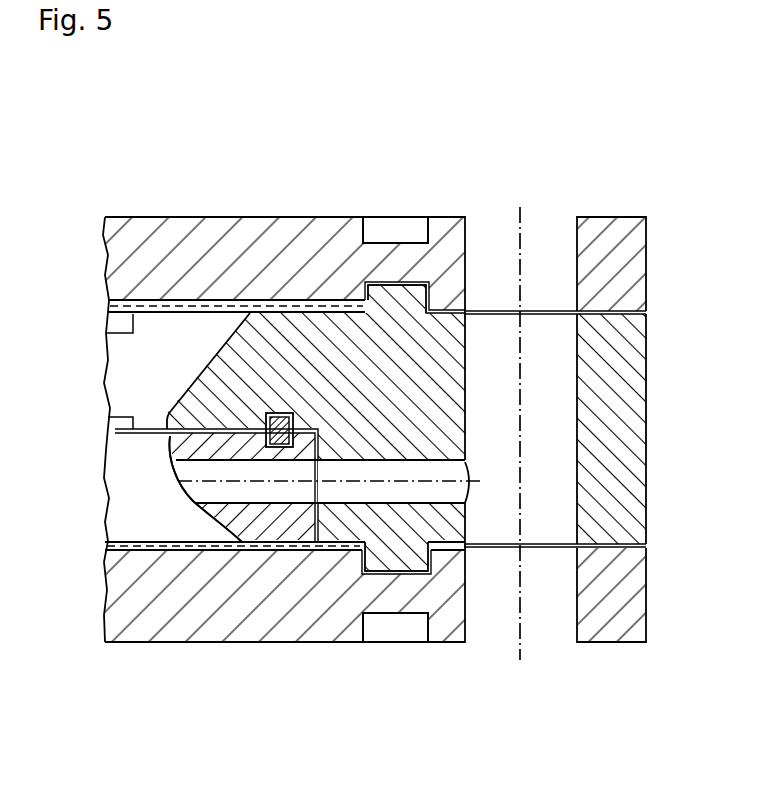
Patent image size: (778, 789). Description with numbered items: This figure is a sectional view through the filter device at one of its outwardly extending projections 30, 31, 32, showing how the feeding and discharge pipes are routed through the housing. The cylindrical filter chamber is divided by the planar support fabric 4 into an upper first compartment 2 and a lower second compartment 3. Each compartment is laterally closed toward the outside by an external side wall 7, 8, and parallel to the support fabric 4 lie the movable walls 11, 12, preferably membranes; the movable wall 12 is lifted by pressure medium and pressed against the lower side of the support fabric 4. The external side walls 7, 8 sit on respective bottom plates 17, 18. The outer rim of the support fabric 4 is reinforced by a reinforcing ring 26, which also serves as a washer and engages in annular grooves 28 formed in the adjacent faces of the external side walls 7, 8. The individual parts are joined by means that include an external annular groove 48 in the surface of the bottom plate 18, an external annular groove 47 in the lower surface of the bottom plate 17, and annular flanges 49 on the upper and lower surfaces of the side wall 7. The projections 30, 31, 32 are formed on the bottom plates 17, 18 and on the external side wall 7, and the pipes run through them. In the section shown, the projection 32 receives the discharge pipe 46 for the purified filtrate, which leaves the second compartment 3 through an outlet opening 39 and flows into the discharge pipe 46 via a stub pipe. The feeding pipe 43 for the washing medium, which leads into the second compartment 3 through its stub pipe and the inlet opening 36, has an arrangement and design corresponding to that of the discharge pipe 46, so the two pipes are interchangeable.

The first compartment 2 is at (133, 385).
The second compartment 3 is at (173, 527).
The support fabric 4 is at (133, 417).
The external side wall 7 is at (225, 375).
The external side wall 8 is at (167, 443).
The movable wall 11 is at (133, 318).
The movable wall 12 is at (133, 541).
The bottom plate 17 is at (187, 227).
The bottom plate 18 is at (235, 613).
The reinforcing ring 26 is at (284, 412).
The annular groove 28 is at (278, 412).
The projection 30 is at (633, 270).
The projection 31 is at (640, 583).
The projection 32 is at (620, 438).
The inlet opening 36 is at (258, 501).
The outlet opening 39 is at (205, 492).
The feeding pipe 43 is at (611, 433).
The discharge pipe 46 is at (548, 384).
The external annular groove 47 is at (375, 283).
The external annular groove 48 is at (410, 232).
The annular flange 49 is at (400, 287).